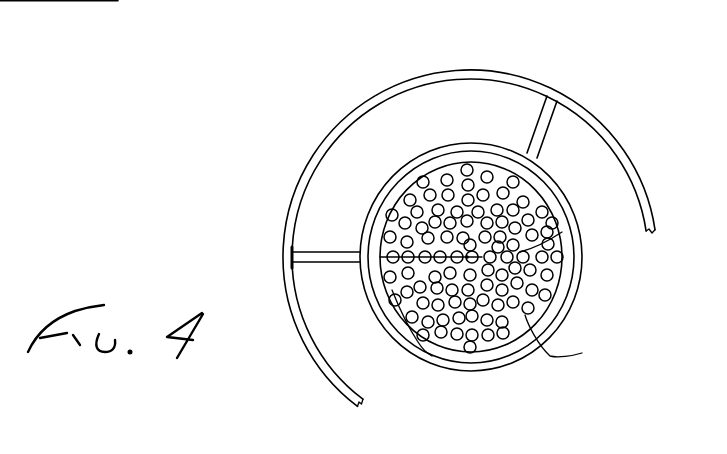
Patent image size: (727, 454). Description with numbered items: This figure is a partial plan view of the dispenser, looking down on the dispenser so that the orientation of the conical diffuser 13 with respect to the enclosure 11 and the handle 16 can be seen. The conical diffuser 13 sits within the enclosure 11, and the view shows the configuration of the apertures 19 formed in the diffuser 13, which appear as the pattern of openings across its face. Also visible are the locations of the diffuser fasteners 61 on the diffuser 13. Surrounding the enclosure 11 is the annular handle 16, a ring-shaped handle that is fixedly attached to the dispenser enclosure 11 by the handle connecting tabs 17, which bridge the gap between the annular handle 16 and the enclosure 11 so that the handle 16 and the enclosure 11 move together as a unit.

The enclosure 11 is at (453, 143).
The conical diffuser 13 is at (468, 330).
The annular handle 16 is at (330, 133).
The handle connecting tabs 17 is at (322, 252).
The apertures 19 is at (513, 305).
The diffuser fasteners 61 is at (463, 200).